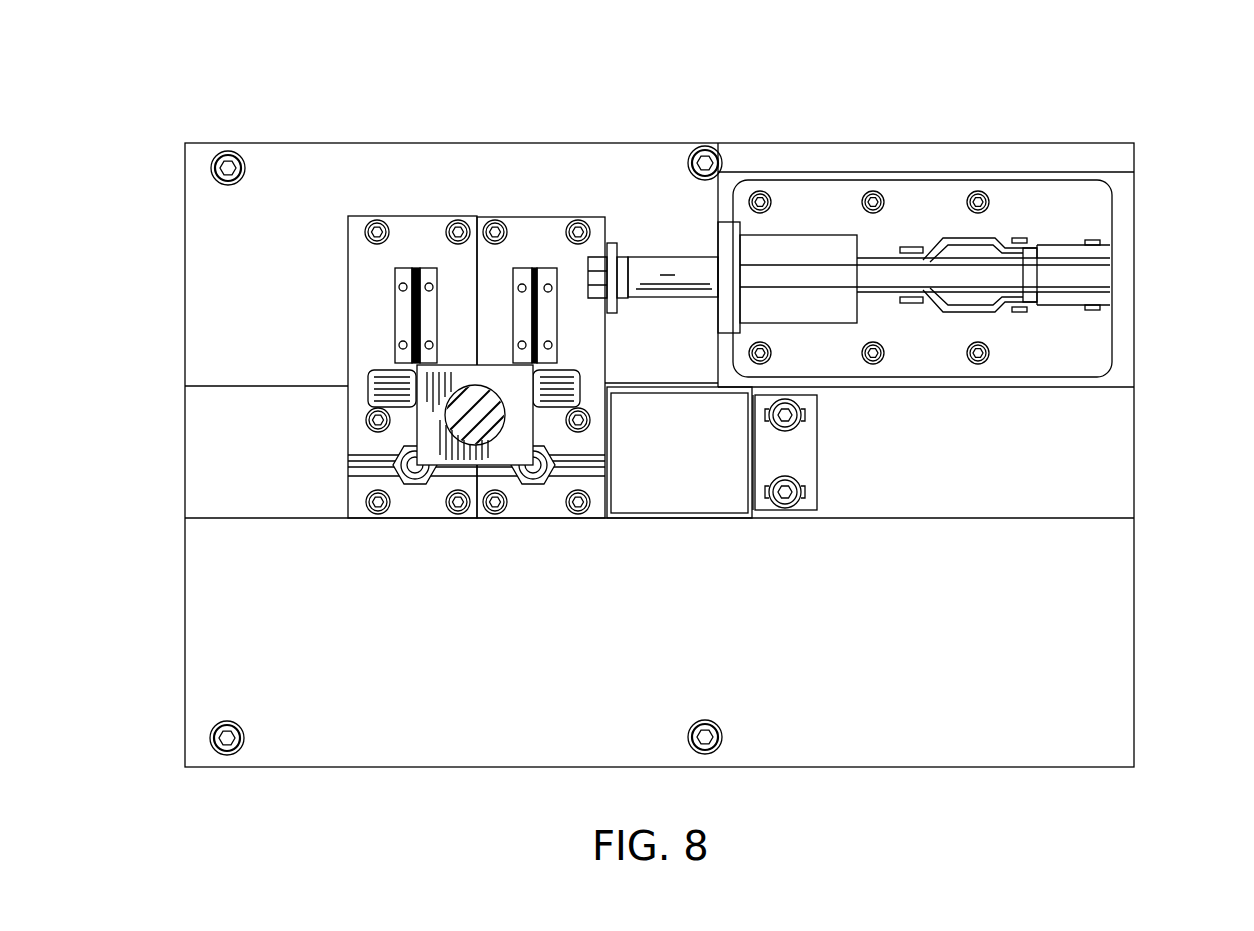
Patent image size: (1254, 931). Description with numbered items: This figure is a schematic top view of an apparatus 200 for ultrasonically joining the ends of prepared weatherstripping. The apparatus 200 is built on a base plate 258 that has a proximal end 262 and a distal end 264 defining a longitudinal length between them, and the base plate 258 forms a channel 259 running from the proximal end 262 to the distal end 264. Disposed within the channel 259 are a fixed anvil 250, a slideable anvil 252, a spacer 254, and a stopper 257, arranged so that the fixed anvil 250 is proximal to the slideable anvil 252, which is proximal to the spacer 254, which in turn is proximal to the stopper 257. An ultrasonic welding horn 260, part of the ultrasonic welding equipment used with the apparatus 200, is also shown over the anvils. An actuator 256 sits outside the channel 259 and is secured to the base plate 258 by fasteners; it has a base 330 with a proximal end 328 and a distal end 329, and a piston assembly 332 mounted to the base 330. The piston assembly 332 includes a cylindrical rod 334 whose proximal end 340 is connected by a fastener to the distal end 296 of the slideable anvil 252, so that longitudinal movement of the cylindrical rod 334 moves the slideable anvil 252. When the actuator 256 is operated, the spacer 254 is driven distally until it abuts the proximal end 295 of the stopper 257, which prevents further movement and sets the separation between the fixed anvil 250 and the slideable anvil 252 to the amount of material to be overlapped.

The apparatus 200 is at (588, 87).
The fixed anvil 250 is at (411, 216).
The slideable anvil 252 is at (509, 217).
The spacer 254 is at (648, 489).
The actuator 256 is at (957, 190).
The stopper 257 is at (813, 477).
The base plate 258 is at (205, 679).
The channel 259 is at (192, 458).
The ultrasonic welding horn 260 is at (442, 468).
The proximal end 262 is at (188, 605).
The distal end 264 is at (1135, 450).
The proximal end 295 is at (753, 486).
The distal end 296 is at (613, 243).
The proximal end 328 is at (717, 318).
The distal end 329 is at (1135, 290).
The base 330 is at (878, 192).
The piston assembly 332 is at (722, 272).
The cylindrical rod 334 is at (662, 267).
The proximal end 340 is at (623, 258).